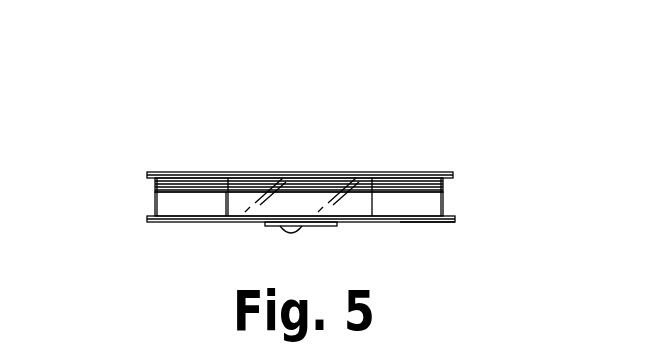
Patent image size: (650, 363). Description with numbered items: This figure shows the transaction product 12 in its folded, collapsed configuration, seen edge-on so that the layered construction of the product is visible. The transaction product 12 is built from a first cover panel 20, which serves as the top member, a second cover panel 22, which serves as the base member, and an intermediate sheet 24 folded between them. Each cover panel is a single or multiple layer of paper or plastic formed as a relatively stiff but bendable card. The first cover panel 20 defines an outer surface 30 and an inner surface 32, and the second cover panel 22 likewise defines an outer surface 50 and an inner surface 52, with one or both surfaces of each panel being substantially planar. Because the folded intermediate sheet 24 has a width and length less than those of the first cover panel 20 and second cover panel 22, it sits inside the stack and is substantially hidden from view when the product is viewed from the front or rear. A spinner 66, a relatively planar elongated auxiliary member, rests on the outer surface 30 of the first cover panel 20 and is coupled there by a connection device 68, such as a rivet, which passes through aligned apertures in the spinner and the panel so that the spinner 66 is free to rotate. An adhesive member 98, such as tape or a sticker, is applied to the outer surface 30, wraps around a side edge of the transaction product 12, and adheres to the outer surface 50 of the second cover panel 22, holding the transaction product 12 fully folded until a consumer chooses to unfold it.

The transaction product 12 is at (122, 92).
The first cover panel 20 is at (456, 219).
The second cover panel 22 is at (454, 172).
The intermediate sheet 24 is at (445, 197).
The outer surface 30 is at (433, 222).
The inner surface 32 is at (148, 217).
The outer surface 50 is at (404, 172).
The inner surface 52 is at (148, 177).
The spinner 66 is at (325, 228).
The connection device 68 is at (301, 233).
The adhesive member 98 is at (228, 202).